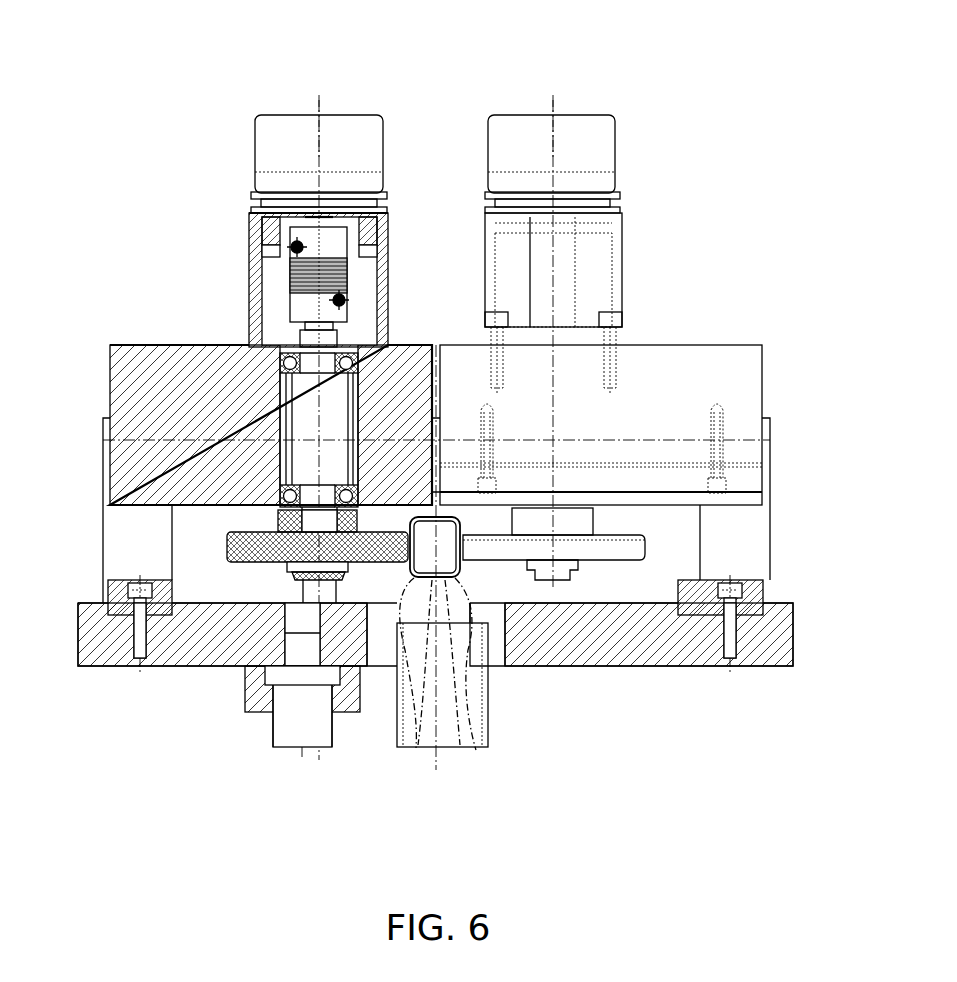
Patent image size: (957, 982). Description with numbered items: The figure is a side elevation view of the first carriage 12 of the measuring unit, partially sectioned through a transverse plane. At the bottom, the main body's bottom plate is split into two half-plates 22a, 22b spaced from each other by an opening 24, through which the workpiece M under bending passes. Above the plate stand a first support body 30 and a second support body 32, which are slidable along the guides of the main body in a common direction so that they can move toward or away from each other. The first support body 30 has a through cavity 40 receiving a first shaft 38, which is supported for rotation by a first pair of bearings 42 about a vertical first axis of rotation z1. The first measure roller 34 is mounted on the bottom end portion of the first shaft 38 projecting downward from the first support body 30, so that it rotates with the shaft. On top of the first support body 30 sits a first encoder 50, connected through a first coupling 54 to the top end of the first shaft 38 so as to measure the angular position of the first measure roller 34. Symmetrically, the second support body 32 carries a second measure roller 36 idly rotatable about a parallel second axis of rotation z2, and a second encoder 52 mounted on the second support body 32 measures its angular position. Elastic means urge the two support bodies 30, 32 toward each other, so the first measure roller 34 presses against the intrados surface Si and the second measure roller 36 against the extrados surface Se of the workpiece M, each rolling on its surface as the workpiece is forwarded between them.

The first carriage 12 is at (143, 300).
The half-plate 22a is at (170, 667).
The half-plate 22b is at (625, 668).
The opening 24 is at (368, 668).
The first support body 30 is at (108, 350).
The second support body 32 is at (763, 373).
The first measure roller 34 is at (258, 562).
The second measure roller 36 is at (645, 548).
The first shaft 38 is at (283, 428).
The through cavity 40 is at (284, 397).
The first pair of bearings 42 is at (357, 353).
The first encoder 50 is at (253, 145).
The second encoder 52 is at (620, 140).
The first coupling 54 is at (289, 283).
The first axis of rotation z1 is at (319, 148).
The second axis of rotation z2 is at (553, 160).
The workpiece M is at (455, 578).
The intrados surface Si is at (416, 748).
The extrados surface Se is at (462, 650).